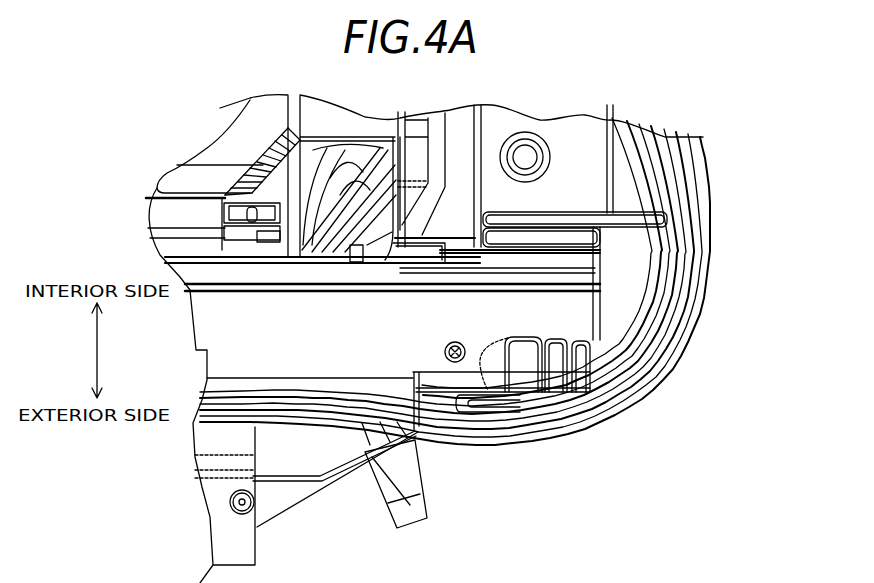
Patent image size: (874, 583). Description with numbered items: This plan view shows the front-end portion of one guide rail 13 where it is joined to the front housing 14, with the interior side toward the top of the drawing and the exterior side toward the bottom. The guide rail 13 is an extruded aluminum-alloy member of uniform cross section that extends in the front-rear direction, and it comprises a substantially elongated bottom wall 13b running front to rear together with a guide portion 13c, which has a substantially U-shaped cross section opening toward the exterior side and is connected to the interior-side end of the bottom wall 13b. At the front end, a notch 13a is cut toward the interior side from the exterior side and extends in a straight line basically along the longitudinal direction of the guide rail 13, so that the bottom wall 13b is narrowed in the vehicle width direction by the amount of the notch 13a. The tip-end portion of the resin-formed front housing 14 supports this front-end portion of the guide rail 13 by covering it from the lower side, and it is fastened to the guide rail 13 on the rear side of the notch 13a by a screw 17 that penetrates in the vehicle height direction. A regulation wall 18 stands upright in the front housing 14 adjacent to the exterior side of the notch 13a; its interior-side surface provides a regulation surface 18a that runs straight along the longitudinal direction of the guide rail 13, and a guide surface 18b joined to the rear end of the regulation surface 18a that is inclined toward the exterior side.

The guide rail 13 is at (352, 382).
The notch 13a is at (483, 395).
The bottom wall 13b is at (658, 343).
The guide portion 13c is at (660, 292).
The front housing 14 is at (635, 401).
The screw 17 is at (443, 352).
The regulation wall 18 is at (556, 338).
The regulation surface 18a is at (652, 370).
The guide surface 18b is at (522, 338).